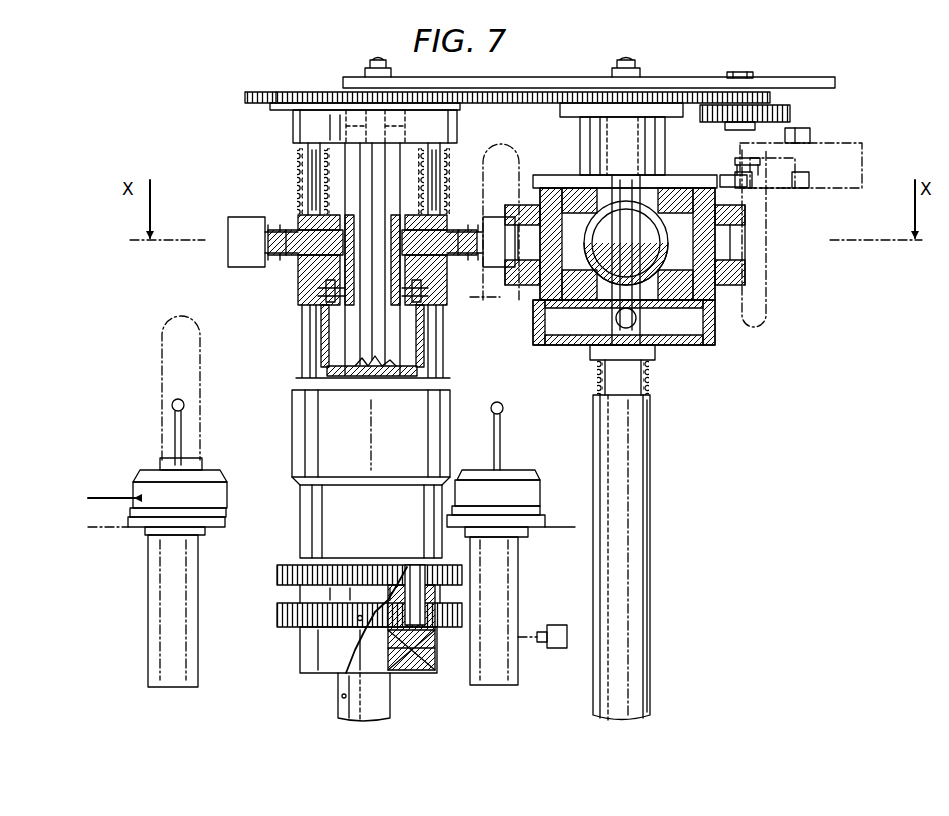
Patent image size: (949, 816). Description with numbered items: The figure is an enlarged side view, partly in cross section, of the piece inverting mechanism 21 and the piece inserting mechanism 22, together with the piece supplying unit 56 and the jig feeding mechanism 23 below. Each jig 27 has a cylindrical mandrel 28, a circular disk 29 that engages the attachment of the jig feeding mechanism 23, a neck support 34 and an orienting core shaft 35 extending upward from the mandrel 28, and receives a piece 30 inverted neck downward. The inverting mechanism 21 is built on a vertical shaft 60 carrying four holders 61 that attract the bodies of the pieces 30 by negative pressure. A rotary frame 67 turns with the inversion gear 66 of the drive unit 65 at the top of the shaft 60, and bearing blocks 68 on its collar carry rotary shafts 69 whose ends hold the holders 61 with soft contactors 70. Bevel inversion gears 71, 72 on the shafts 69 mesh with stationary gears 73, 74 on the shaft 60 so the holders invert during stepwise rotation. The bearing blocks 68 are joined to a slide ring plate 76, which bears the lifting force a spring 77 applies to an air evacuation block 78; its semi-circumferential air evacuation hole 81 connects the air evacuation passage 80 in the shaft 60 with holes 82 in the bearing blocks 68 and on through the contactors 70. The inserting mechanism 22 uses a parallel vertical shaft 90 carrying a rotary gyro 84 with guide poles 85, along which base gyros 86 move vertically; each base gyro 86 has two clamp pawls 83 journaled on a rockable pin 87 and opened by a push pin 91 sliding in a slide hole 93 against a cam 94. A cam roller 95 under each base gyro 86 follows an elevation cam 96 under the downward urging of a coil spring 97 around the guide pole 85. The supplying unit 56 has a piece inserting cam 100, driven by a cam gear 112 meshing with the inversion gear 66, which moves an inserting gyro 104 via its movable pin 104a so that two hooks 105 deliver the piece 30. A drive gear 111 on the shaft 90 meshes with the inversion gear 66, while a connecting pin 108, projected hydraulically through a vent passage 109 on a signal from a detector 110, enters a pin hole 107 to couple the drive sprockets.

The piece inverting mechanism 21 is at (690, 77).
The piece inserting mechanism 22 is at (242, 100).
The jig feeding mechanism 23 is at (105, 527).
The jig 27 is at (146, 640).
The cylindrical mandrel 28 is at (522, 608).
The circular disk 29 is at (222, 522).
The piece 30 is at (162, 378).
The neck support 34 is at (150, 476).
The orienting core shaft 35 is at (175, 415).
The piece supplying unit 56 is at (872, 154).
The vertical shaft 60 is at (652, 490).
The holder 61 is at (773, 333).
The drive unit 65 is at (276, 590).
The inversion gear 66 is at (572, 92).
The rotary frame 67 is at (655, 150).
The bearing block 68 is at (728, 168).
The rotary shaft 69 is at (548, 190).
The contactor 70 is at (745, 280).
The bevel inversion gear 71 is at (590, 190).
The bevel inversion gear 72 is at (663, 178).
The stationary gear 73 is at (668, 322).
The stationary gear 74 is at (583, 322).
The slide ring plate 76 is at (700, 310).
The spring 77 is at (652, 378).
The air evacuation block 78 is at (562, 346).
The air evacuation passage 80 is at (628, 566).
The air evacuation hole 81 is at (601, 330).
The hole 82 is at (540, 336).
The clamp pawl 83 is at (242, 228).
The rotary gyro 84 is at (300, 542).
The guide pole 85 is at (322, 355).
The base gyro 86 is at (300, 270).
The rockable pin 87 is at (286, 232).
The vertical shaft 90 is at (362, 356).
The push pin 91 is at (300, 250).
The slide hole 93 is at (312, 190).
The cam 94 is at (352, 240).
The cam roller 95 is at (328, 292).
The elevation cam 96 is at (322, 330).
The coil spring 97 is at (300, 148).
The piece inserting cam 100 is at (792, 113).
The inserting gyro 104 is at (742, 135).
The movable pin 104a is at (810, 136).
The hook 105 is at (752, 186).
The pin hole 107 is at (412, 566).
The connecting pin 108 is at (432, 599).
The vent passage 109 is at (380, 698).
The detector 110 is at (556, 650).
The drive gear 111 is at (277, 92).
The cam gear 112 is at (752, 76).